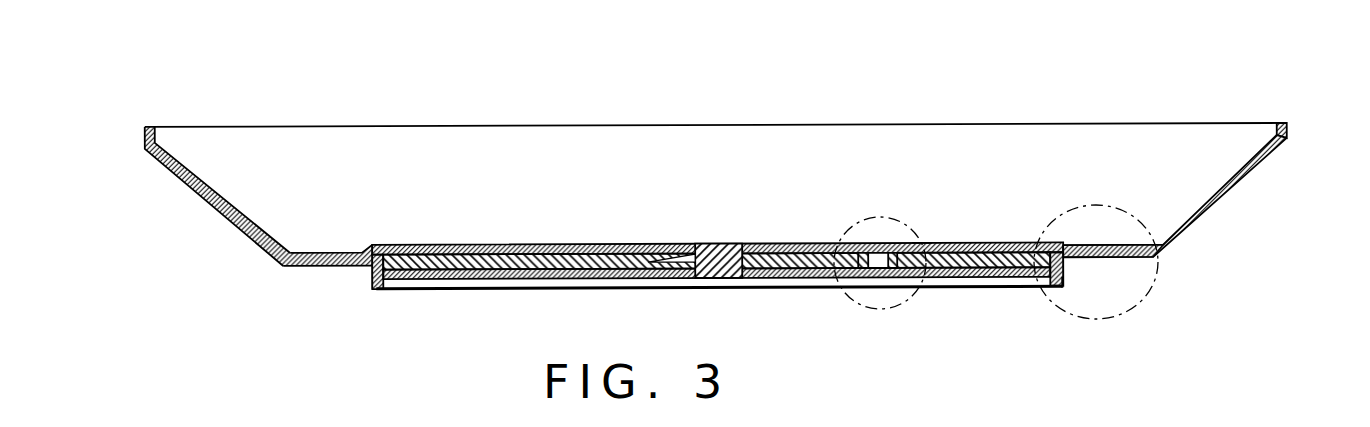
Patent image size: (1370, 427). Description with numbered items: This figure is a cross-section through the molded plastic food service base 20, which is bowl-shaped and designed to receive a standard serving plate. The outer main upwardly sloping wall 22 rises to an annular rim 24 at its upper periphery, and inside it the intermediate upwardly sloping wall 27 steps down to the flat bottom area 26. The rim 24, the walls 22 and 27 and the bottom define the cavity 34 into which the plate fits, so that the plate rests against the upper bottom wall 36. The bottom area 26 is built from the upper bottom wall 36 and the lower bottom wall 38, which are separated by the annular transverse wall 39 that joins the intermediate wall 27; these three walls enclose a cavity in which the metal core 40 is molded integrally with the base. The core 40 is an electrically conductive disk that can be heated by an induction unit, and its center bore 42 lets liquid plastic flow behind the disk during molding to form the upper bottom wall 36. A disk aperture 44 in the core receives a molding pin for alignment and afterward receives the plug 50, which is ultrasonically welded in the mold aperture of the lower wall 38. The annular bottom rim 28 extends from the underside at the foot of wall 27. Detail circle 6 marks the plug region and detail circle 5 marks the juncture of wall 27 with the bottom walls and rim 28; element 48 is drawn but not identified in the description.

The food service base 20 is at (1055, 106).
The main upwardly sloping wall 22 is at (1228, 198).
The annular rim 24 is at (1288, 133).
The bottom area 26 is at (406, 221).
The intermediate upwardly sloping wall 27 is at (300, 266).
The annular bottom rim 28 is at (372, 292).
The cavity 34 is at (763, 191).
The upper bottom wall 36 is at (504, 243).
The lower bottom wall 38 is at (495, 279).
The annular transverse wall 39 is at (366, 266).
The core 40 is at (558, 279).
The center bore 42 is at (641, 278).
The disk aperture 44 is at (922, 243).
The insert block 48 is at (715, 243).
The plug 50 is at (882, 278).
The section view indicator FIG. 5 is at (1023, 289).
The section view indicator FIG. 6 is at (828, 289).